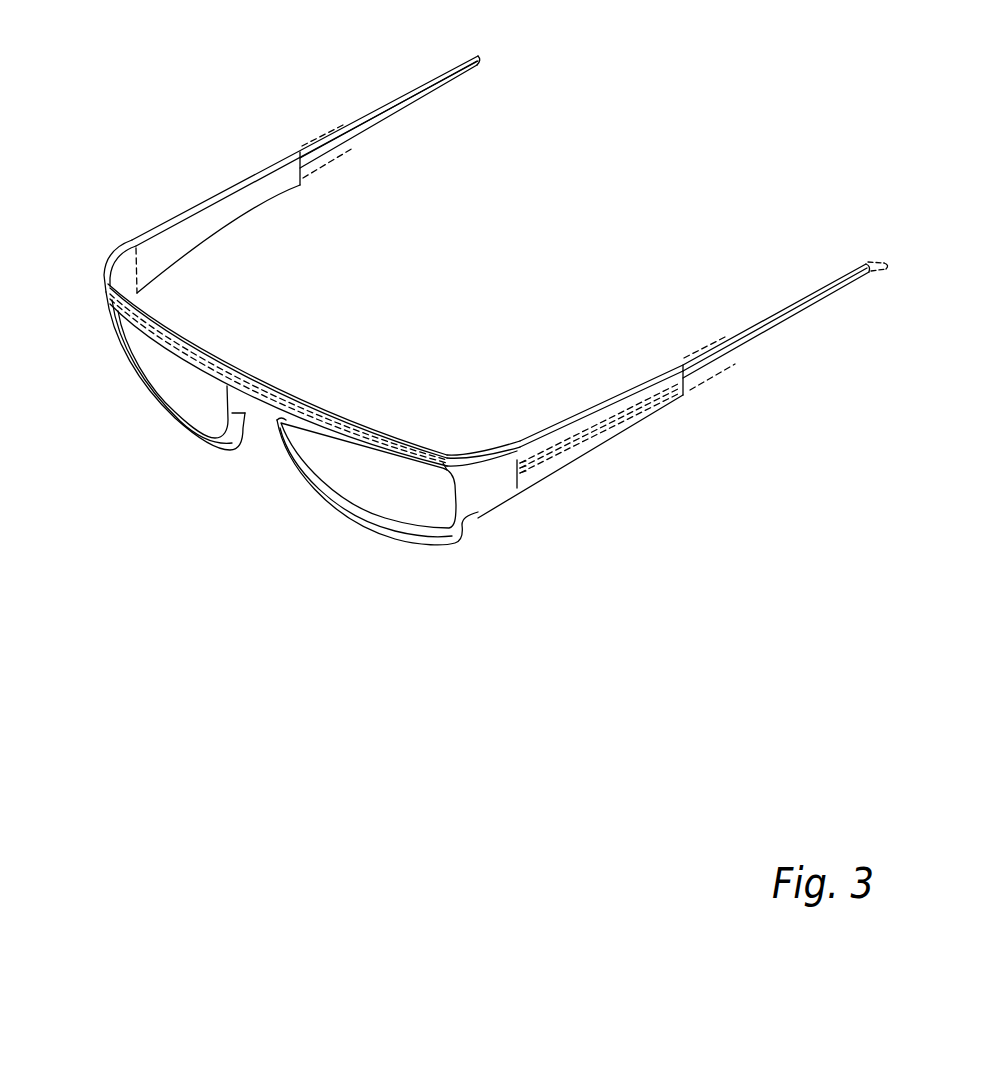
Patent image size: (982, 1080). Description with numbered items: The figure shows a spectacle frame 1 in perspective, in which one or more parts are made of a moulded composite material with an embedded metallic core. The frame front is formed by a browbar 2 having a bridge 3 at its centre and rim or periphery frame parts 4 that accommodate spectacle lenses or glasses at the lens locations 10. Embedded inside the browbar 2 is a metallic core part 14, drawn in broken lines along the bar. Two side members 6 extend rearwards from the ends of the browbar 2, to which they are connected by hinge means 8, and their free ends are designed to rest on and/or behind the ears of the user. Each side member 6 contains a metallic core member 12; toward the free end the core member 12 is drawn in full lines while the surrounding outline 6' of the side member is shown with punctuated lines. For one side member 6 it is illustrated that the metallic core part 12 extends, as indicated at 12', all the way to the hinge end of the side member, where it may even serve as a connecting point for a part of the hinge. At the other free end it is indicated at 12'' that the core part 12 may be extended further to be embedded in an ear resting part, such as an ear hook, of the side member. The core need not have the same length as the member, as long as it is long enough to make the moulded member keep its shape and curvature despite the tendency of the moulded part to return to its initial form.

The spectacle frame 1 is at (202, 542).
The browbar 2 is at (212, 358).
The bridge 3 is at (245, 442).
The rim frame parts 4 is at (137, 393).
The side member 6 is at (435, 354).
The outline of the side member 6' is at (521, 294).
The hinge means 8 is at (118, 232).
The lens locations 10 is at (196, 391).
The metallic core member 12 is at (587, 307).
The hinge-end extension of the metallic core part 12' is at (619, 534).
The ear-rest extension of the metallic core part 12'' is at (879, 369).
The metallic core part of the browbar 14 is at (322, 424).